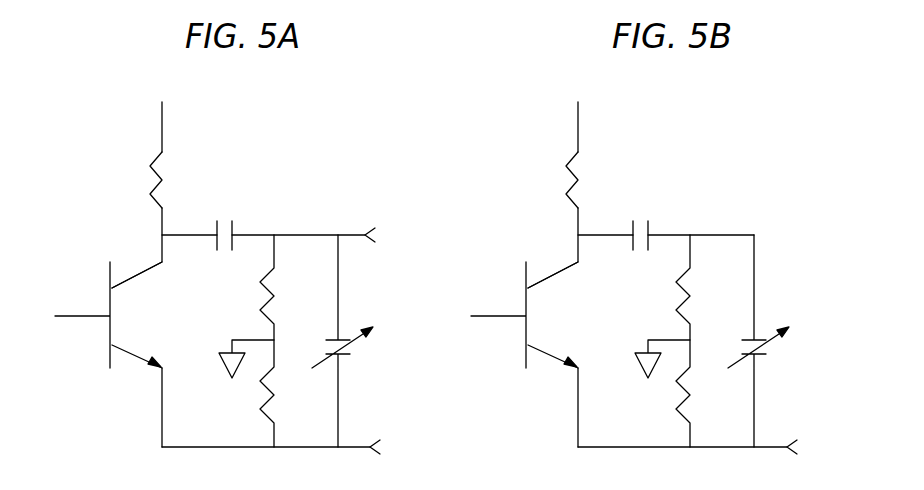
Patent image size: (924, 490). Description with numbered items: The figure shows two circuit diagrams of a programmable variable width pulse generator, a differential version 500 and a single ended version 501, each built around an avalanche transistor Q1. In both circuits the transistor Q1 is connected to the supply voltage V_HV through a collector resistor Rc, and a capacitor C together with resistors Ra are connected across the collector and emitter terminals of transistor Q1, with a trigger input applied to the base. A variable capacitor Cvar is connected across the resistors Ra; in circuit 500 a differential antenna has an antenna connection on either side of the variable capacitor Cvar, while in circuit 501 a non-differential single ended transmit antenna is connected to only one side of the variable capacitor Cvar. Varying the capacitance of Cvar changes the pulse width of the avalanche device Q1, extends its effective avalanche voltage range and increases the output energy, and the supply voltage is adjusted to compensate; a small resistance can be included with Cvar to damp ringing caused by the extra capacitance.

In FIG. 5A, the transmitter circuit with antenna connected across resonant network 500 is at (358, 117).
In FIG. 5B, the transmitter circuit with antenna connected at one end of resonant network 501 is at (779, 117).
In FIG. 5A, the collector resistor Rc is at (171, 180).
In FIG. 5B, the collector resistor Rc is at (587, 180).
In FIG. 5A, the avalanche transistor Q1 is at (108, 315).
In FIG. 5B, the avalanche transistor Q1 is at (524, 315).
In FIG. 5A, the capacitor C is at (225, 224).
In FIG. 5B, the capacitor C is at (642, 224).
In FIG. 5A, the resistors Ra is at (285, 341).
In FIG. 5B, the resistors Ra is at (701, 341).
In FIG. 5A, the variable capacitor Cvar is at (355, 341).
In FIG. 5B, the variable capacitor Cvar is at (771, 341).